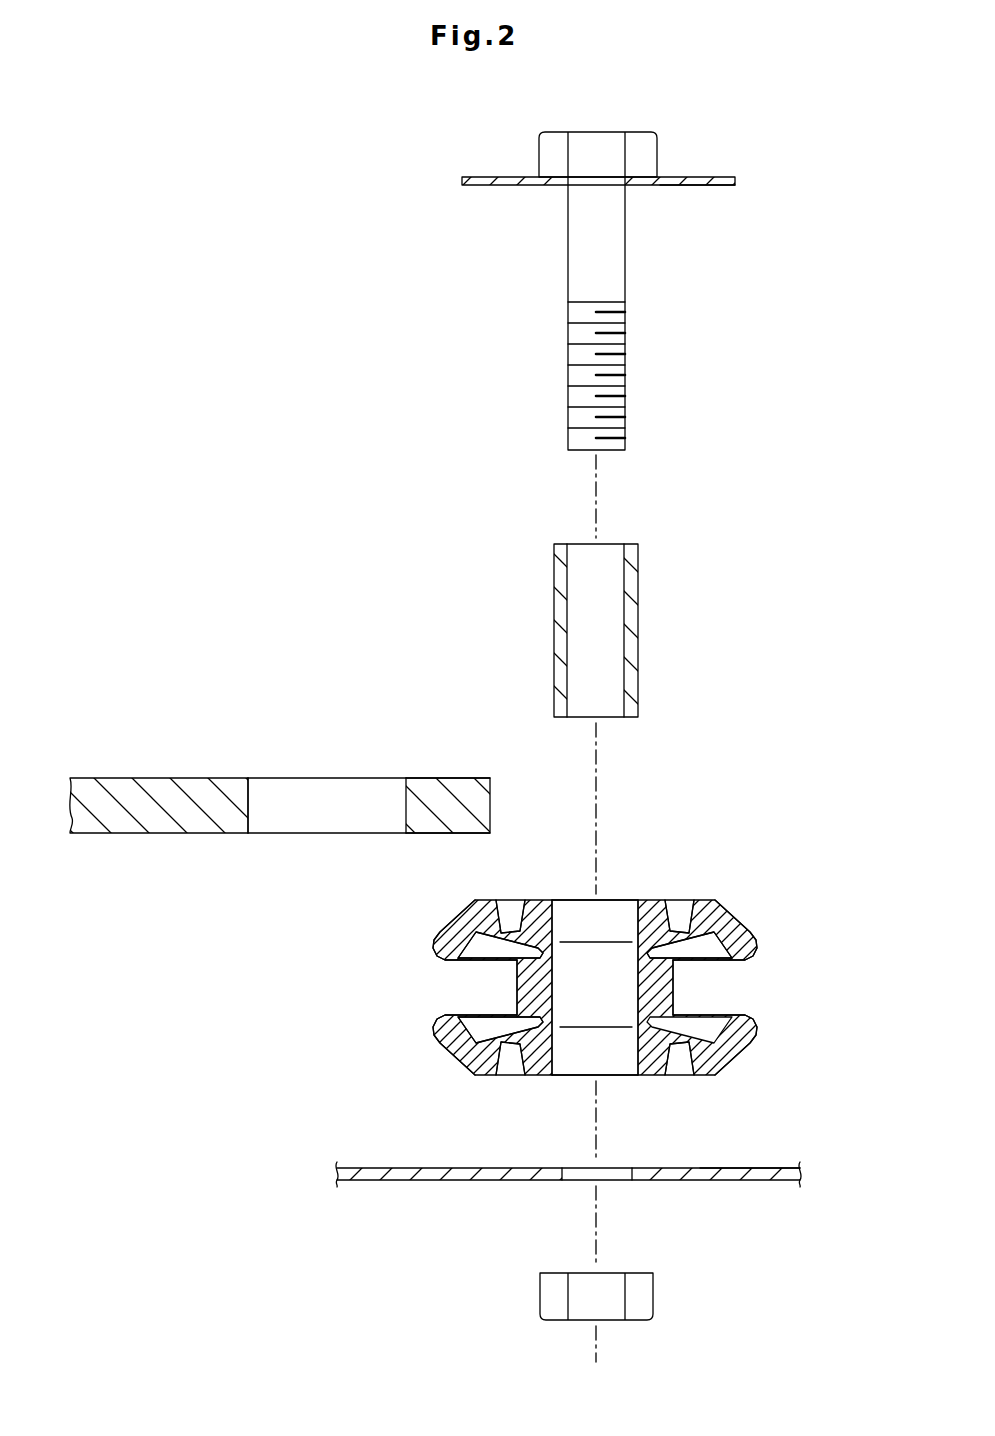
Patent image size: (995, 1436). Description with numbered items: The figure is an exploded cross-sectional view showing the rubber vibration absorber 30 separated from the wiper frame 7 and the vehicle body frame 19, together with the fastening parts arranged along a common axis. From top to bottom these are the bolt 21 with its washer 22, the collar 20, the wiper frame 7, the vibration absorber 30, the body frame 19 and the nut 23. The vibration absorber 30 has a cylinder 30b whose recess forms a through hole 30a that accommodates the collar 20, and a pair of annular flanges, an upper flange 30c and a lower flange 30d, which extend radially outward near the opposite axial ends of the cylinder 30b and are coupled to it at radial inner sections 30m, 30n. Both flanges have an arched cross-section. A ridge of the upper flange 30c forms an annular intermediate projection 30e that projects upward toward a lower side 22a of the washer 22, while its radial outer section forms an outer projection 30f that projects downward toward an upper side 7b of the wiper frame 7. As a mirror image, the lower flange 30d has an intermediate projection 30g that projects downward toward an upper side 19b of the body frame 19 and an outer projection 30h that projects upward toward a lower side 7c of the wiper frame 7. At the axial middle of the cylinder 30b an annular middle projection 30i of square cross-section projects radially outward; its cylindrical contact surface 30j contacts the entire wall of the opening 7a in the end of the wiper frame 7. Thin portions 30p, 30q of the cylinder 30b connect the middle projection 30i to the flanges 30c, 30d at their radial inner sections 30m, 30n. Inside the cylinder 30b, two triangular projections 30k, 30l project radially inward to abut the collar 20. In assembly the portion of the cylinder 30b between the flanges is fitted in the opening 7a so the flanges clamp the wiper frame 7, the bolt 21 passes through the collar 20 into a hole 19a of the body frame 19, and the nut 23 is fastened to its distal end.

The wiper frame 7 is at (120, 775).
The opening 7a is at (257, 790).
The upper side of the wiper frame 7b is at (450, 773).
The lower side of the wiper frame 7c is at (440, 833).
The vehicle body frame 19 is at (365, 1168).
The hole 19a is at (620, 1180).
The upper side of the body frame 19b is at (745, 1168).
The collar 20 is at (638, 565).
The bolt 21 is at (617, 280).
The washer 22 is at (717, 176).
The lower side of the washer 22a is at (685, 185).
The nut 23 is at (650, 1298).
The vibration absorber 30 is at (775, 846).
The through hole 30a is at (552, 990).
The cylinder 30b is at (660, 908).
The upper flange 30c is at (740, 905).
The lower flange 30d is at (738, 1048).
The intermediate projection 30e is at (470, 900).
The outer projection 30f is at (437, 957).
The intermediate projection 30g is at (455, 1071).
The outer projection 30h is at (437, 1019).
The middle projection 30i is at (673, 985).
The contact surface 30j is at (517, 982).
The projection 30k is at (555, 945).
The projection 30l is at (556, 1035).
The radial inner section 30m is at (522, 925).
The radial inner section 30n is at (510, 1050).
The thin portion 30p is at (650, 950).
The thin portion 30q is at (680, 1050).